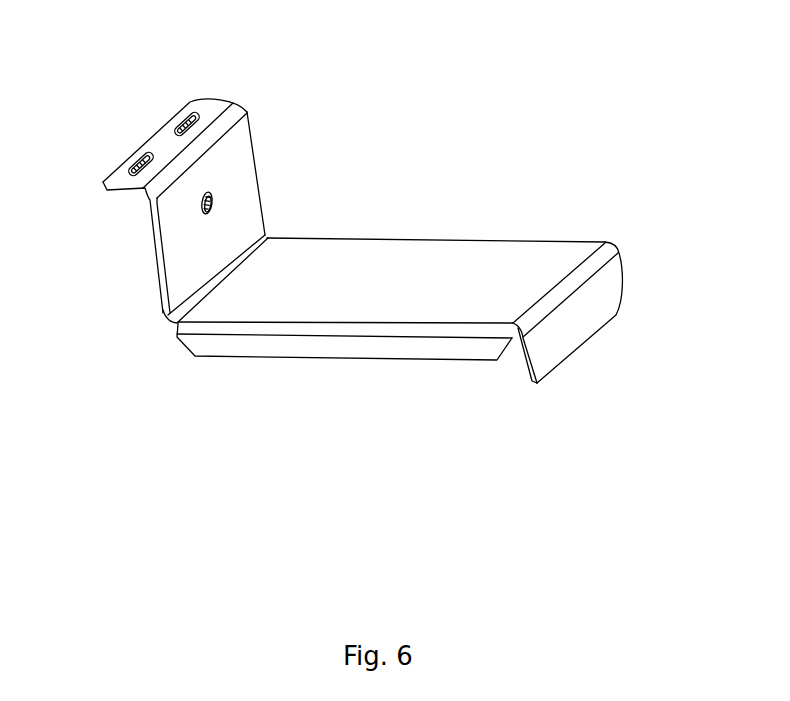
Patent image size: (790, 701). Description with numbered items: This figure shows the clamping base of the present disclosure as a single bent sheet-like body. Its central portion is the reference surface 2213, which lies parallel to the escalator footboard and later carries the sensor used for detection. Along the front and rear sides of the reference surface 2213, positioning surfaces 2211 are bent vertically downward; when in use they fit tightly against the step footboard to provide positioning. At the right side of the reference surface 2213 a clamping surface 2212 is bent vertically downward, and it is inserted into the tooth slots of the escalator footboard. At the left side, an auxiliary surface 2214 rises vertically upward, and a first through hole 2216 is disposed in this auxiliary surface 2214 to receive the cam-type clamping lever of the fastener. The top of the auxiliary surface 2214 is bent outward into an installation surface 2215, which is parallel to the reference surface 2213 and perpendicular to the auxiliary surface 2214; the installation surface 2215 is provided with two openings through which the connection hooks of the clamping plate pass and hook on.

The positioning surface 2211 is at (343, 340).
The clamping surface 2212 is at (608, 293).
The reference surface 2213 is at (450, 253).
The auxiliary surface 2214 is at (248, 181).
The installation surface 2215 is at (208, 120).
The first through hole 2216 is at (205, 215).